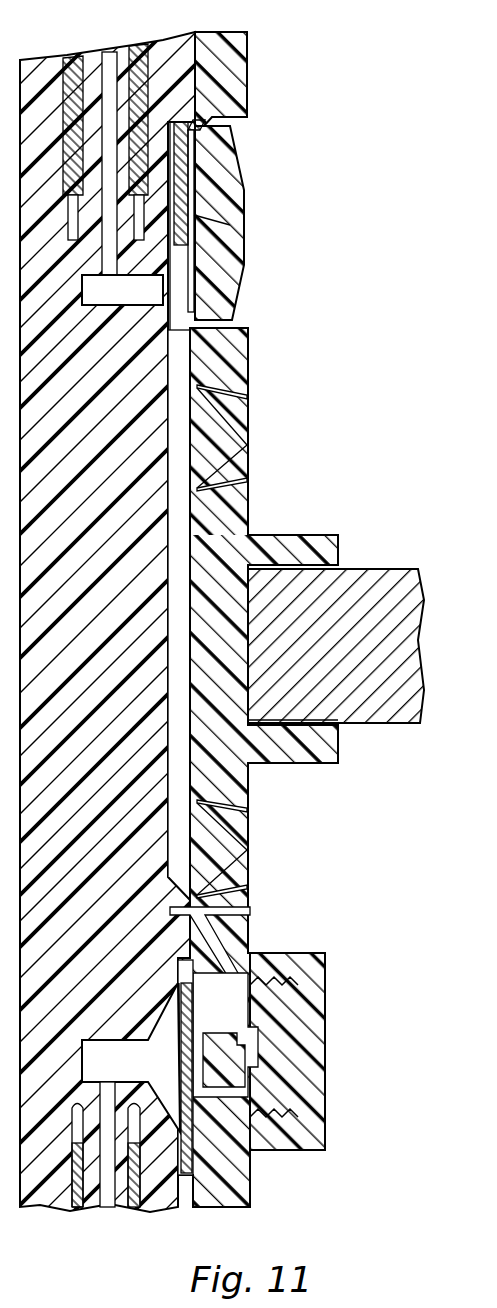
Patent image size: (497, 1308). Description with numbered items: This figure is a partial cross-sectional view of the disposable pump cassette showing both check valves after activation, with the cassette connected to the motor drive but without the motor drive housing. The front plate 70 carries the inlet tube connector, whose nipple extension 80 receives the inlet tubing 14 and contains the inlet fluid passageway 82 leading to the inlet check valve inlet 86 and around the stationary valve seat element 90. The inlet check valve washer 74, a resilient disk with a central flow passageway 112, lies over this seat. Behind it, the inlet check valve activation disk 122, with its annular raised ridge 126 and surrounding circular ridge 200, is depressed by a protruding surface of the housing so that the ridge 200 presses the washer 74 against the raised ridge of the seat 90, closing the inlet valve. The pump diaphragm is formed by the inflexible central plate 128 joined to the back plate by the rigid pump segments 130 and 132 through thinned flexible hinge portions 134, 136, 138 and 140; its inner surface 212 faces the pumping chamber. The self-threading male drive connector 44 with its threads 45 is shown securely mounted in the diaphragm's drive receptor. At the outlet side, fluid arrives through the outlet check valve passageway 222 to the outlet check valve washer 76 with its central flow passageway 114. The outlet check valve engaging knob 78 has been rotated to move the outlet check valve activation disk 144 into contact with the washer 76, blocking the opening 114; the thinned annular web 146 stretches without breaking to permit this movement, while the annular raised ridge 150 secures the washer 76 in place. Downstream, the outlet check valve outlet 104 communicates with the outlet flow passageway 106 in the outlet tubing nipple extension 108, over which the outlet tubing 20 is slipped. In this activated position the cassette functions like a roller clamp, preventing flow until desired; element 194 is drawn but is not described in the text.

The inlet tubing 14 is at (134, 62).
The outlet tubing 20 is at (76, 1208).
The male drive connector 44 is at (420, 625).
The self-threading threads 45 is at (322, 720).
The front plate 70 is at (113, 637).
The inlet check valve washer 74 is at (192, 162).
The outlet check valve washer 76 is at (185, 990).
The outlet check valve engaging knob 78 is at (325, 1082).
The nipple extension 80 is at (80, 62).
The inlet fluid passageway 82 is at (108, 58).
The inlet check valve inlet 86 is at (126, 290).
The stationary valve seat element 90 is at (186, 200).
The outlet check valve outlet 104 is at (95, 1047).
The outlet flow passageway 106 is at (107, 1208).
The outlet tubing nipple extension 108 is at (82, 1124).
The central flow passageway 112 is at (232, 224).
The central flow passageway 114 is at (180, 1062).
The inlet check valve activation disk 122 is at (238, 178).
The annular raised ridge 126 is at (200, 127).
The central plate 128 is at (238, 630).
The pump segment 130 is at (233, 428).
The pump segment 132 is at (236, 842).
The flexible hinge portion 134 is at (214, 486).
The flexible hinge portion 136 is at (214, 391).
The flexible hinge portion 138 is at (214, 803).
The flexible hinge portion 140 is at (214, 894).
The outlet check valve activation disk 144 is at (215, 1031).
The annular web 146 is at (278, 536).
The annular raised ridge 150 is at (175, 910).
The lug 194 is at (241, 1060).
The circular ridge 200 is at (206, 124).
The inner surface 212 is at (178, 525).
The outlet check valve passageway 222 is at (272, 938).